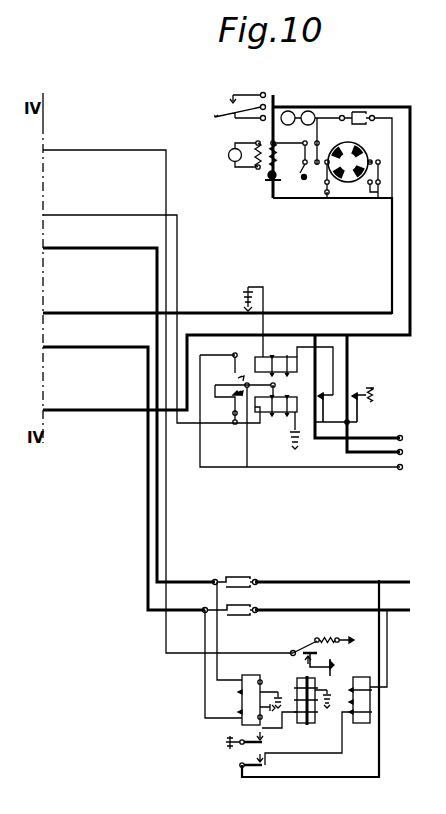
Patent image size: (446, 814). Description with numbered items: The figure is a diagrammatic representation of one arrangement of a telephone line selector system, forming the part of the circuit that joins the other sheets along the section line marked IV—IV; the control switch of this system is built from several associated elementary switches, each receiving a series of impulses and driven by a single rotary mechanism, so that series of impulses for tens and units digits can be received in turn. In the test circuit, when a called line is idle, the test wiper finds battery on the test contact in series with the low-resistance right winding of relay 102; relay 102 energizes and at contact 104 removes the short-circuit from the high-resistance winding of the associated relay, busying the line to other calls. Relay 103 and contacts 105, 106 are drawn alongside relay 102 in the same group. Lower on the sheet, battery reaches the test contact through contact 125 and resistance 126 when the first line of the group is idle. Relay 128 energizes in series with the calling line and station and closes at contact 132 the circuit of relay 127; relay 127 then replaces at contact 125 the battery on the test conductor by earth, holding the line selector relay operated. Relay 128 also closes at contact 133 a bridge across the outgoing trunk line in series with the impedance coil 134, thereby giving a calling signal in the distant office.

The relay 102 is at (277, 417).
The relay 103 is at (294, 367).
The contact of relay 102 104 is at (242, 410).
The relay contact 105 is at (332, 408).
The spring contact 106 is at (365, 405).
The contact 125 is at (309, 658).
The resistance 126 is at (324, 639).
The relay 127 is at (308, 724).
The relay 128 is at (243, 653).
The contact of relay 128 132 is at (263, 741).
The contact of relay 128 133 is at (263, 764).
The impedance coil 134 is at (358, 724).